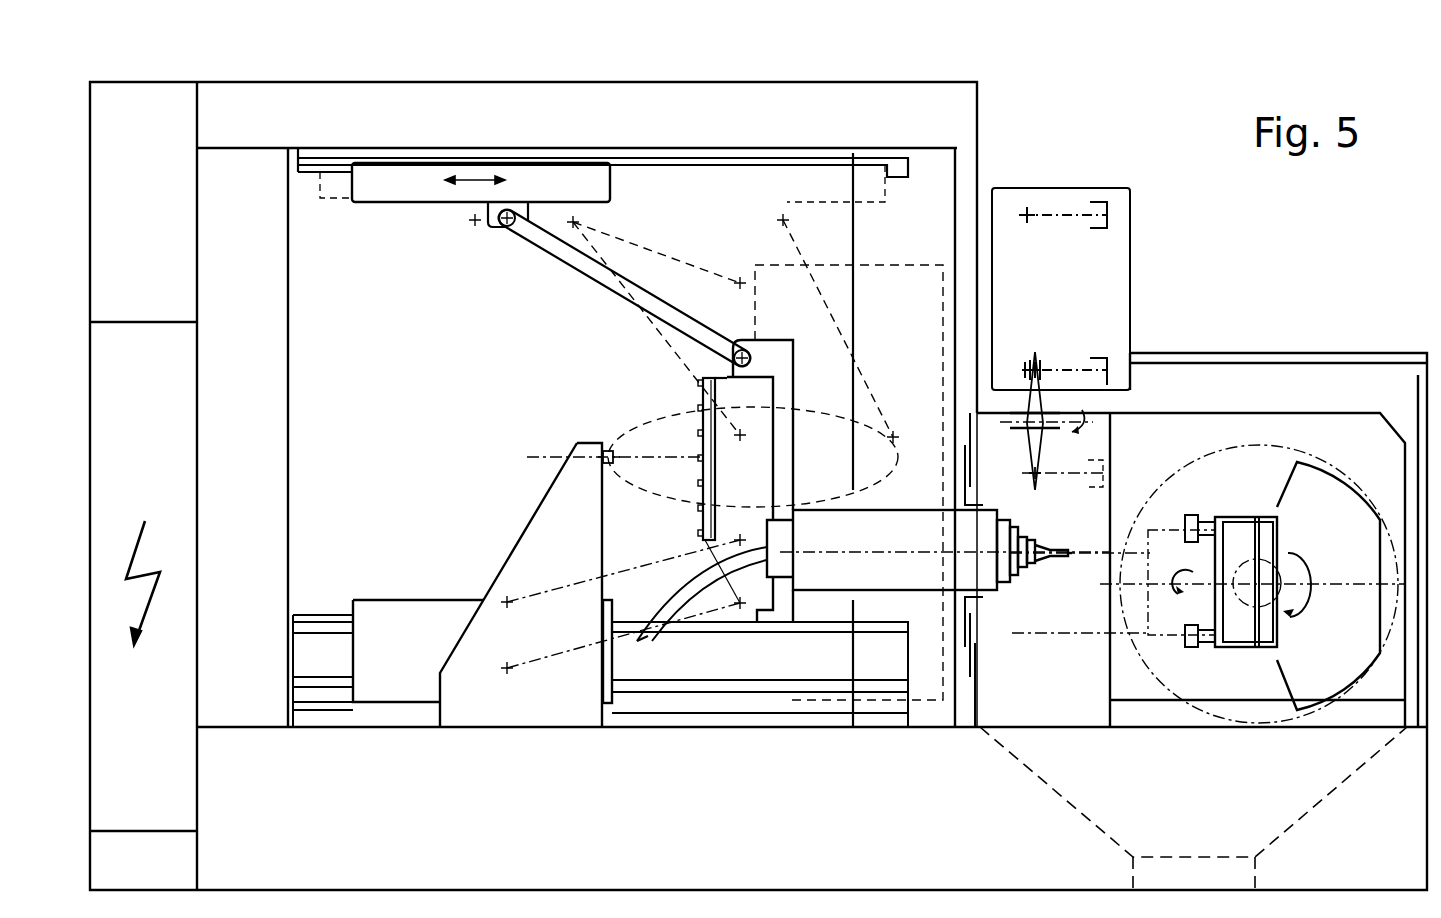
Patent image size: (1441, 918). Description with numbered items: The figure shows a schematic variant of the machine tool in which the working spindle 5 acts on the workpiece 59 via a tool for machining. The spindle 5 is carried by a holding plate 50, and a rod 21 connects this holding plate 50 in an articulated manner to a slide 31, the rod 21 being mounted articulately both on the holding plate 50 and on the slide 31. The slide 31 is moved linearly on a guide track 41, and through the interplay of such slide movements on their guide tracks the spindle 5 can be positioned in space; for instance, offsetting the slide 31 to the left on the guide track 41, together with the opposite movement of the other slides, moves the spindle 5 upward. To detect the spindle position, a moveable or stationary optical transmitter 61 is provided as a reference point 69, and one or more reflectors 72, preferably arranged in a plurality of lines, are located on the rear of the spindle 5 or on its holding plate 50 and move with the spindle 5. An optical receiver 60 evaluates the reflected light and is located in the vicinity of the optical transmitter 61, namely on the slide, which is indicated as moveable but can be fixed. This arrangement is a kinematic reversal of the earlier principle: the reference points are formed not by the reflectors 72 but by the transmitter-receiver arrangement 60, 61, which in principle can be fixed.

The spindle 5 is at (888, 572).
The rod 21 is at (593, 273).
The slide 31 is at (410, 178).
The guide track 41 is at (688, 165).
The holding plate 50 is at (752, 400).
The workpiece 59 is at (1178, 540).
The optical receiver 60 is at (600, 457).
The optical transmitter 61 is at (610, 452).
The reference point 69 is at (608, 464).
The reflectors 72 is at (698, 408).